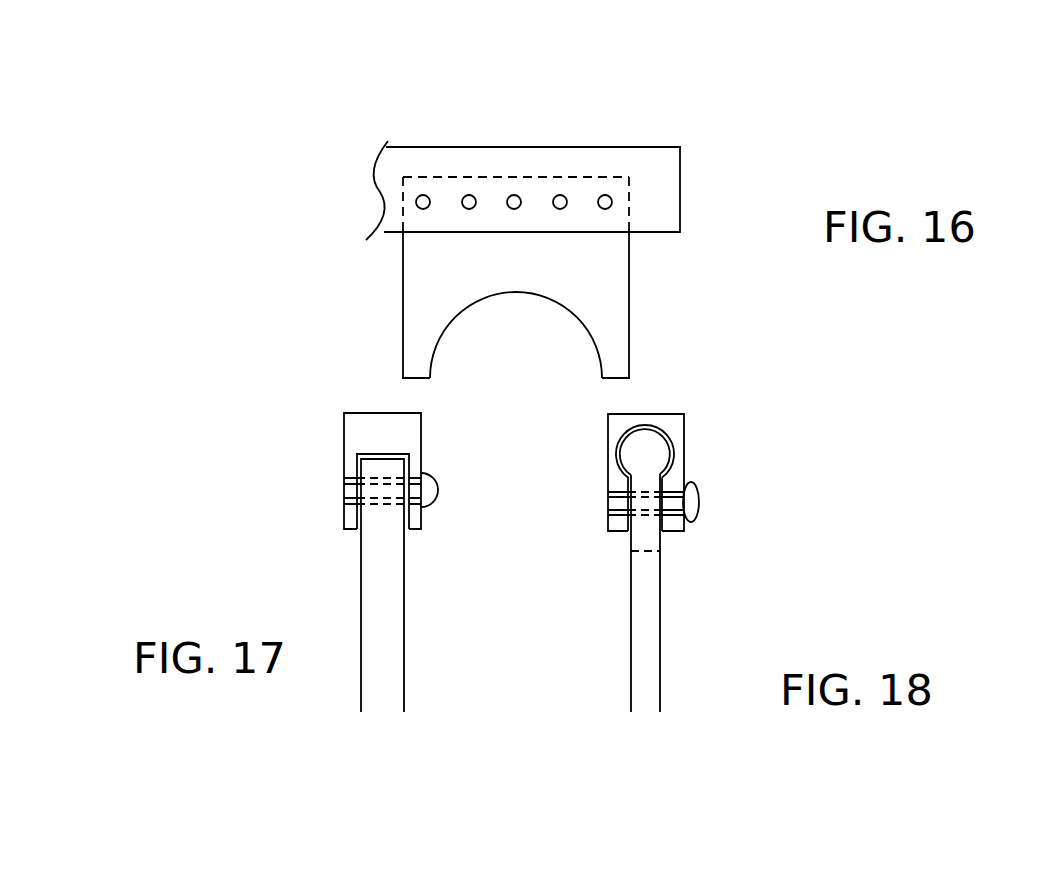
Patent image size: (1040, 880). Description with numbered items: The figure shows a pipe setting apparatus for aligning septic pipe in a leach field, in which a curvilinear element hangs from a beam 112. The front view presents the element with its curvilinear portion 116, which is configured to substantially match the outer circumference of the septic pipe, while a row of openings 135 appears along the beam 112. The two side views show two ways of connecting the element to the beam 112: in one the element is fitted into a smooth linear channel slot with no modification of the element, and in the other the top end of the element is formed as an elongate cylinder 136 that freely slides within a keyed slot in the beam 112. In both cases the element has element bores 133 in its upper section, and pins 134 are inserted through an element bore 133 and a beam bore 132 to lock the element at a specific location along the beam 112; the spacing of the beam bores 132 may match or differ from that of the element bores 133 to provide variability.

In FIG. 16, the beam 112 is at (617, 143).
In FIG. 17, the beam 112 is at (378, 410).
In FIG. 18, the beam 112 is at (650, 412).
In FIG. 16, the curvilinear portion 116 is at (509, 295).
In FIG. 17, the beam bore 132 is at (348, 503).
In FIG. 18, the beam bore 132 is at (620, 515).
In FIG. 17, the element bore 133 is at (413, 505).
In FIG. 18, the element bore 133 is at (647, 489).
In FIG. 17, the pin 134 is at (432, 483).
In FIG. 18, the pin 134 is at (692, 508).
In FIG. 16, the holes 135 is at (425, 188).
In FIG. 18, the rounded head 136 is at (654, 457).